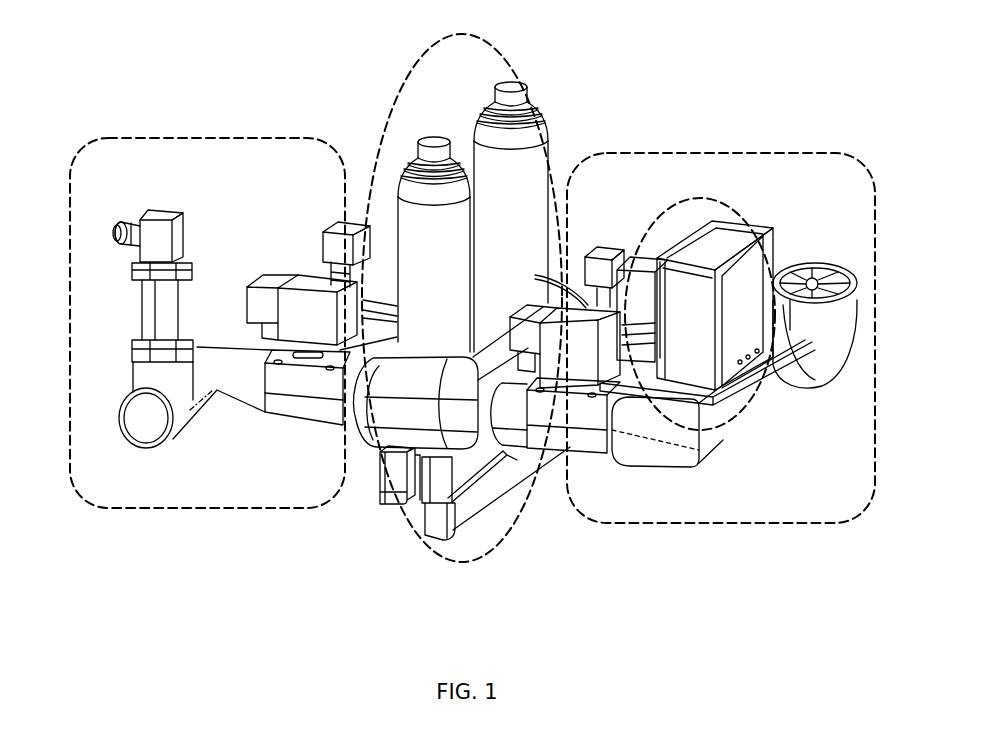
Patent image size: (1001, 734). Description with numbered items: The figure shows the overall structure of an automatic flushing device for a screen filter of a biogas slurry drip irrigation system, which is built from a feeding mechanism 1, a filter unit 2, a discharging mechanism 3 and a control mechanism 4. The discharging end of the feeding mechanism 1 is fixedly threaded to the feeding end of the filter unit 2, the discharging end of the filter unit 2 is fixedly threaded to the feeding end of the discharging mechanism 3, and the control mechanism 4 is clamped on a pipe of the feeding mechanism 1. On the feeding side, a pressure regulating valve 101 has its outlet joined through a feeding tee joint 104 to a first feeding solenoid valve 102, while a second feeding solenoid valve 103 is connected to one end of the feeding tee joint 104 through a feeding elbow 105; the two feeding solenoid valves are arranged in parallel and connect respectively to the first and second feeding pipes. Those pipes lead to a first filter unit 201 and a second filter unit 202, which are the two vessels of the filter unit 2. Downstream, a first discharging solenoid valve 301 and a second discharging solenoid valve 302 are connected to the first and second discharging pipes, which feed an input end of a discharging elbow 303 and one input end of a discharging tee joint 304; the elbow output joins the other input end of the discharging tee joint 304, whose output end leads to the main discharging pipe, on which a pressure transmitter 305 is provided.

The feeding mechanism 1 is at (815, 167).
The filter unit 2 is at (447, 130).
The discharging mechanism 3 is at (232, 162).
The control mechanism 4 is at (715, 207).
The pressure regulating valve 101 is at (850, 280).
The first feeding solenoid valve 102 is at (590, 247).
The second feeding solenoid valve 103 is at (587, 350).
The feeding tee joint 104 is at (790, 367).
The feeding elbow 105 is at (680, 453).
The first filter unit 201 is at (530, 117).
The second filter unit 202 is at (442, 292).
The first discharging solenoid valve 301 is at (345, 225).
The second discharging solenoid valve 302 is at (330, 362).
The discharging elbow 303 is at (292, 272).
The discharging tee joint 304 is at (217, 390).
The pressure transmitter 305 is at (157, 303).